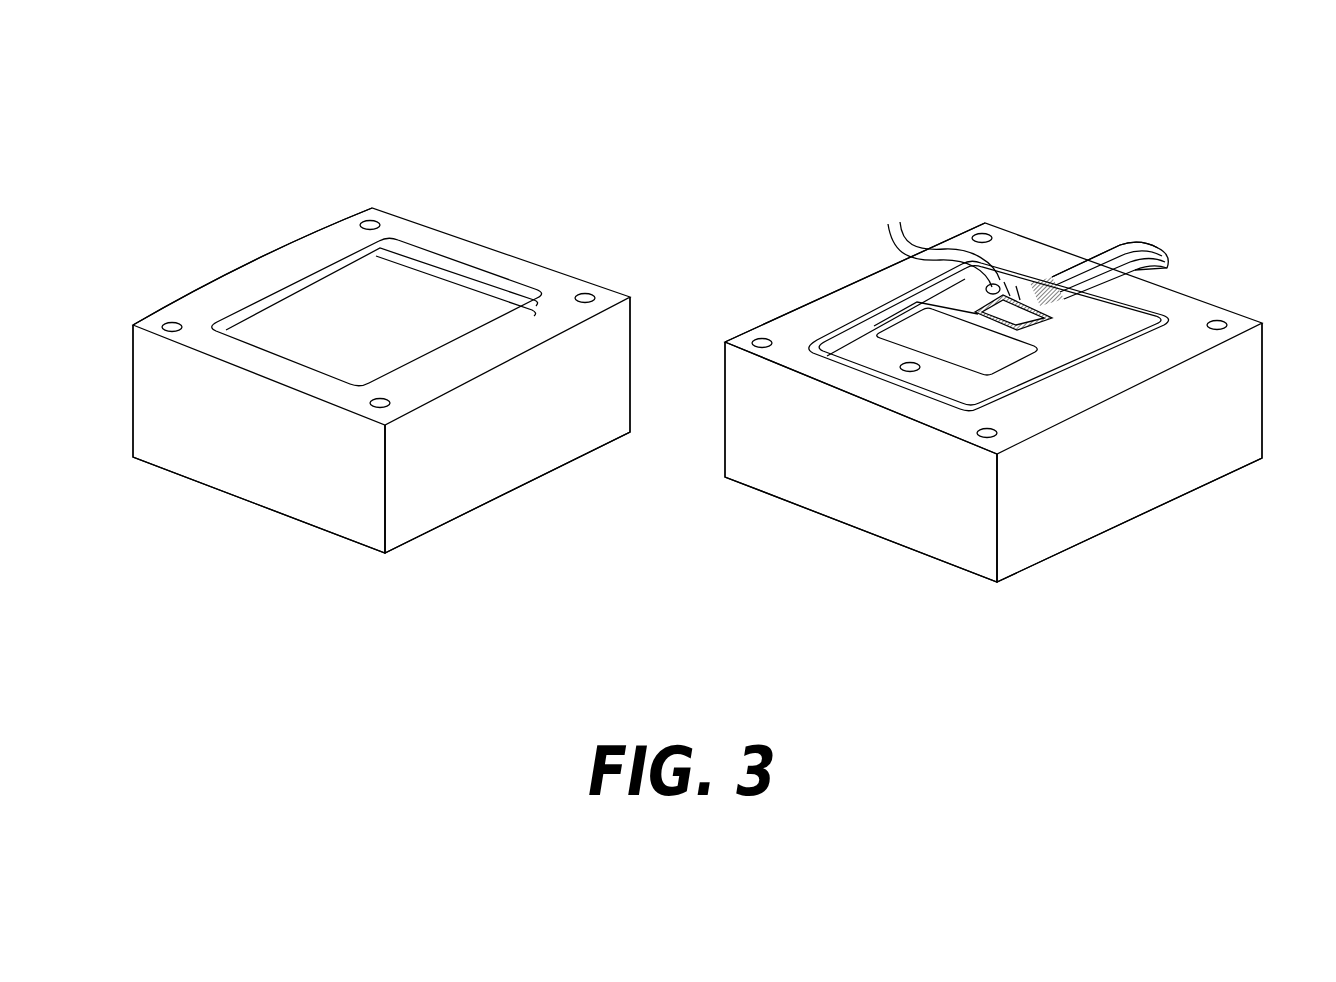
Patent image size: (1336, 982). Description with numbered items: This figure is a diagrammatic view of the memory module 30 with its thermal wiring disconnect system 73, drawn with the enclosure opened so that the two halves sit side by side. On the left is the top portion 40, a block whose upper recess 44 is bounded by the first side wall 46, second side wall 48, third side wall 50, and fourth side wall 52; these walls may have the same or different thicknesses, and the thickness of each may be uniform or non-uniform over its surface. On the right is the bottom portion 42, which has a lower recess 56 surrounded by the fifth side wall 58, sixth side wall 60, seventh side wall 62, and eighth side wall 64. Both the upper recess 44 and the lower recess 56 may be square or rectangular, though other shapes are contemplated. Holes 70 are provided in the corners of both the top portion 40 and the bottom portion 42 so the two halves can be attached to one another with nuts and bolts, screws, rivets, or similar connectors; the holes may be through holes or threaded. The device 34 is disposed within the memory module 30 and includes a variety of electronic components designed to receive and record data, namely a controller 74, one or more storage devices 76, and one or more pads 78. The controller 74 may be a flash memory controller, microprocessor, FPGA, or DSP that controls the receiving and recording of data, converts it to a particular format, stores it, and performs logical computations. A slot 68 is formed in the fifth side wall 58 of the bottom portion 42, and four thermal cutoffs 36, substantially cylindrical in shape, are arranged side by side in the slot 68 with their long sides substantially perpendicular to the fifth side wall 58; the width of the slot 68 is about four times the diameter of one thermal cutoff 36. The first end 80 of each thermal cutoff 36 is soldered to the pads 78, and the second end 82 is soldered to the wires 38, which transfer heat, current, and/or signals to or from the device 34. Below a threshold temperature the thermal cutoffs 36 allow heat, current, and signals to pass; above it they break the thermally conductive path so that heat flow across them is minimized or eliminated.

The memory module 30 is at (746, 100).
The device 34 is at (1055, 340).
The thermal cutoffs 36 is at (1063, 262).
The wires 38 is at (1100, 257).
The top portion 40 is at (416, 135).
The bottom portion 42 is at (1246, 278).
The upper recess 44 is at (428, 262).
The first side wall 46 is at (495, 255).
The second side wall 48 is at (270, 258).
The third side wall 50 is at (270, 370).
The fourth side wall 52 is at (483, 355).
The lower recess 56 is at (975, 397).
The fifth side wall 58 is at (1045, 252).
The sixth side wall 60 is at (845, 296).
The seventh side wall 62 is at (872, 395).
The eighth side wall 64 is at (1050, 410).
The slot 68 is at (1162, 330).
The holes 70 is at (172, 322).
The thermal wiring disconnect system 73 is at (1152, 217).
The controller 74 is at (978, 288).
The storage devices 76 is at (980, 262).
The pads 78 is at (1075, 335).
The first end 80 is at (1052, 283).
The second end 82 is at (1062, 283).